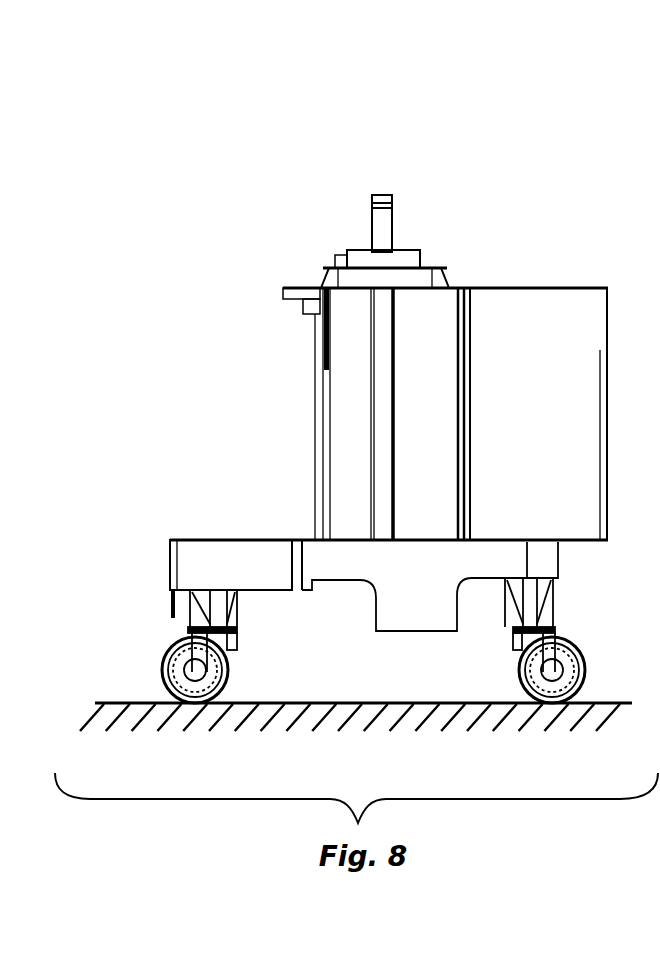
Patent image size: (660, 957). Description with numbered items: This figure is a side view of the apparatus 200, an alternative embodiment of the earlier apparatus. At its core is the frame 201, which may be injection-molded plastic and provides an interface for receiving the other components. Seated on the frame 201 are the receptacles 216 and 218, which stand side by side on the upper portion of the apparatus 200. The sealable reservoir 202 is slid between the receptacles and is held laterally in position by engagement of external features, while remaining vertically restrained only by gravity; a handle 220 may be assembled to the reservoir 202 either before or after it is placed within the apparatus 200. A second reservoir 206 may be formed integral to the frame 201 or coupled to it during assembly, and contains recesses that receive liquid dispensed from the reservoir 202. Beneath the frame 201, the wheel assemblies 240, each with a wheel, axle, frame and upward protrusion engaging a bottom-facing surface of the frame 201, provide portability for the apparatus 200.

The apparatus 200 is at (532, 131).
The handle 220 is at (380, 192).
The reservoir 202 is at (322, 278).
The receptacle 216 is at (407, 447).
The receptacle 218 is at (557, 343).
The frame 201 is at (393, 603).
The reservoir 206 is at (252, 577).
The wheel assemblies 240 is at (230, 664).